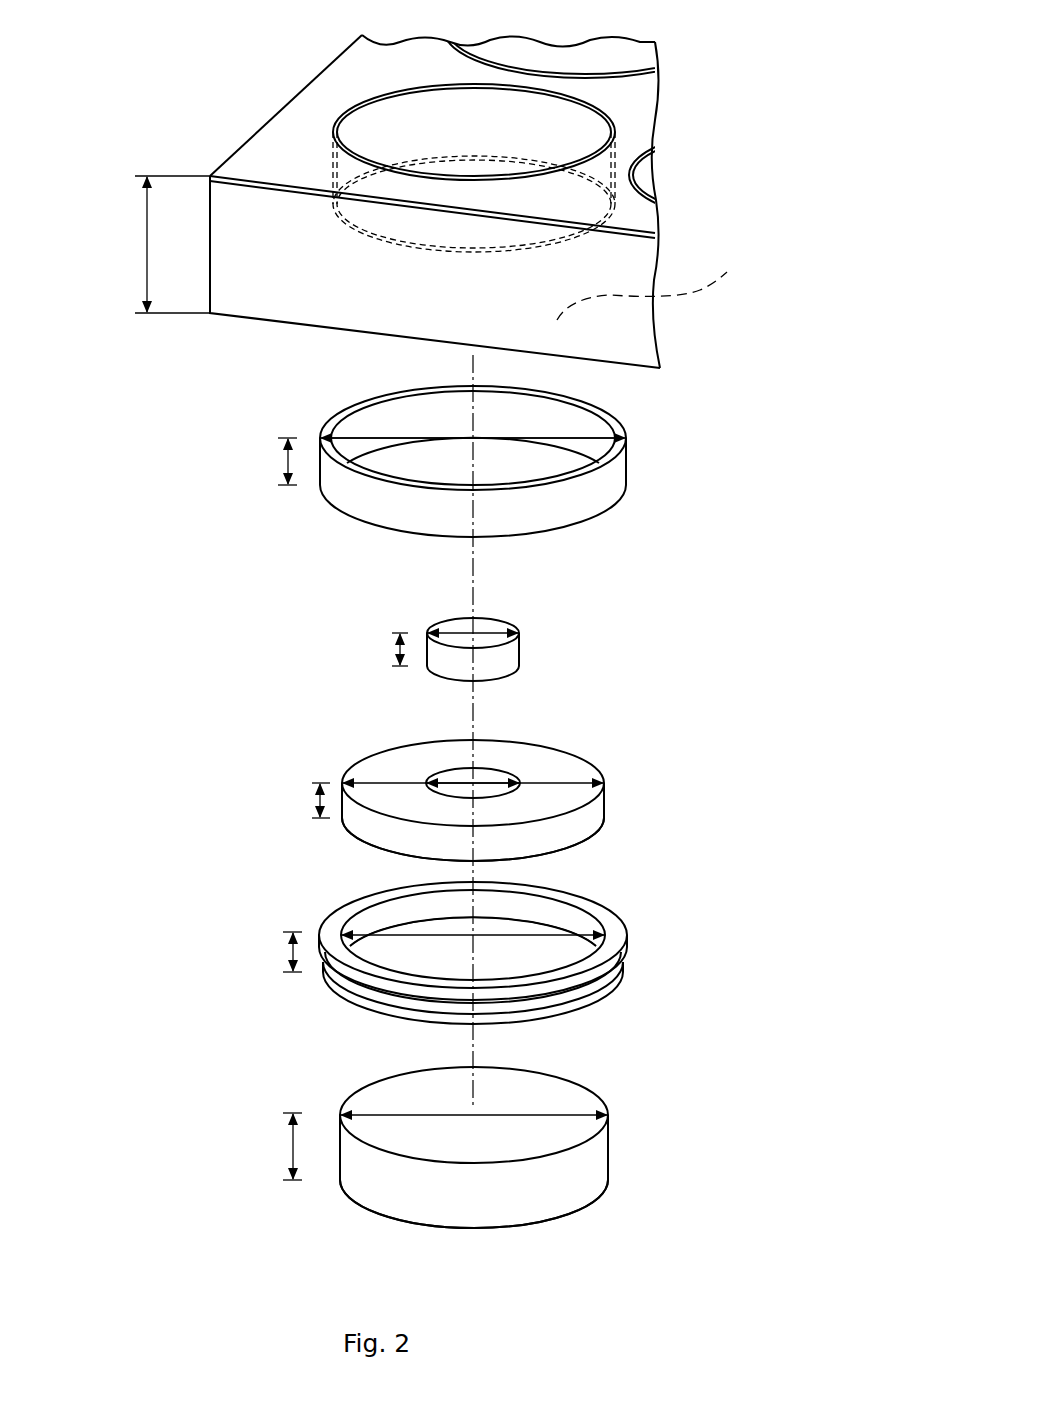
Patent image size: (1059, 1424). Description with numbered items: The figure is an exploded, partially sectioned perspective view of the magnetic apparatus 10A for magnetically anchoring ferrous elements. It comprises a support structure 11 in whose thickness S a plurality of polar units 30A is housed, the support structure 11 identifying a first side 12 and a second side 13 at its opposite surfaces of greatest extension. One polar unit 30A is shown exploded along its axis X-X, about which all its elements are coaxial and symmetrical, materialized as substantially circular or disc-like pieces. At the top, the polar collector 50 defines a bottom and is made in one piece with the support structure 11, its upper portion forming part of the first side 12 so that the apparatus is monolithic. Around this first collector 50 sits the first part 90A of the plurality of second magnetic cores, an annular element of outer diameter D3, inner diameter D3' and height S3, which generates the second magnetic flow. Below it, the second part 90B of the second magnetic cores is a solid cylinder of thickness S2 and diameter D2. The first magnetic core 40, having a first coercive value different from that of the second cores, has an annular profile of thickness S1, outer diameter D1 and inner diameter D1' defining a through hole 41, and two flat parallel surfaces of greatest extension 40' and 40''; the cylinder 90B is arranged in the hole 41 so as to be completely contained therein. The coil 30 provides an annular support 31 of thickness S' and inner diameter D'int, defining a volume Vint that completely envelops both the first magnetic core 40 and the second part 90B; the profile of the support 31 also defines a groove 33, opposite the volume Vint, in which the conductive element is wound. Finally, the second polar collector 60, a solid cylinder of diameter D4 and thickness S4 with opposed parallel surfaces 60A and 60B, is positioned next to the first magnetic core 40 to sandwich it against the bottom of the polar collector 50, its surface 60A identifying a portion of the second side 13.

The magnetic apparatus 10A is at (697, 88).
The support structure 11 is at (618, 328).
The first side 12 is at (272, 155).
The second side 13 is at (659, 283).
The polar unit 30A is at (362, 96).
The polar collector 50 is at (557, 205).
The thickness S is at (168, 244).
The axis X-X is at (474, 365).
The first part of the plurality of second magnetic cores 90A is at (577, 503).
The outer diameter D3 is at (446, 393).
The inner diameter D3' is at (464, 393).
The height S3 is at (282, 460).
The second part of the plurality of second magnetic cores 90B is at (505, 658).
The diameter D2 is at (453, 632).
The thickness S2 is at (397, 650).
The first magnetic core 40 is at (518, 832).
The surface with the greatest extension 40' is at (486, 764).
The surface with the greatest extension 40'' is at (502, 863).
The hole 41 is at (531, 794).
The outer diameter D1 is at (457, 736).
The inner diameter D1' is at (454, 736).
The thickness S1 is at (312, 798).
The coil 30 is at (645, 985).
The support 31 is at (630, 930).
The groove 33 is at (636, 957).
The inner diameter D'int is at (459, 889).
The volume Vint is at (531, 931).
The thickness S' is at (258, 954).
The second polar collector 60 is at (577, 1222).
The surface with the greatest extension 60A is at (472, 1207).
The surface with the greatest extension 60B is at (555, 1095).
The diameter D4 is at (370, 1113).
The thickness S4 is at (290, 1143).